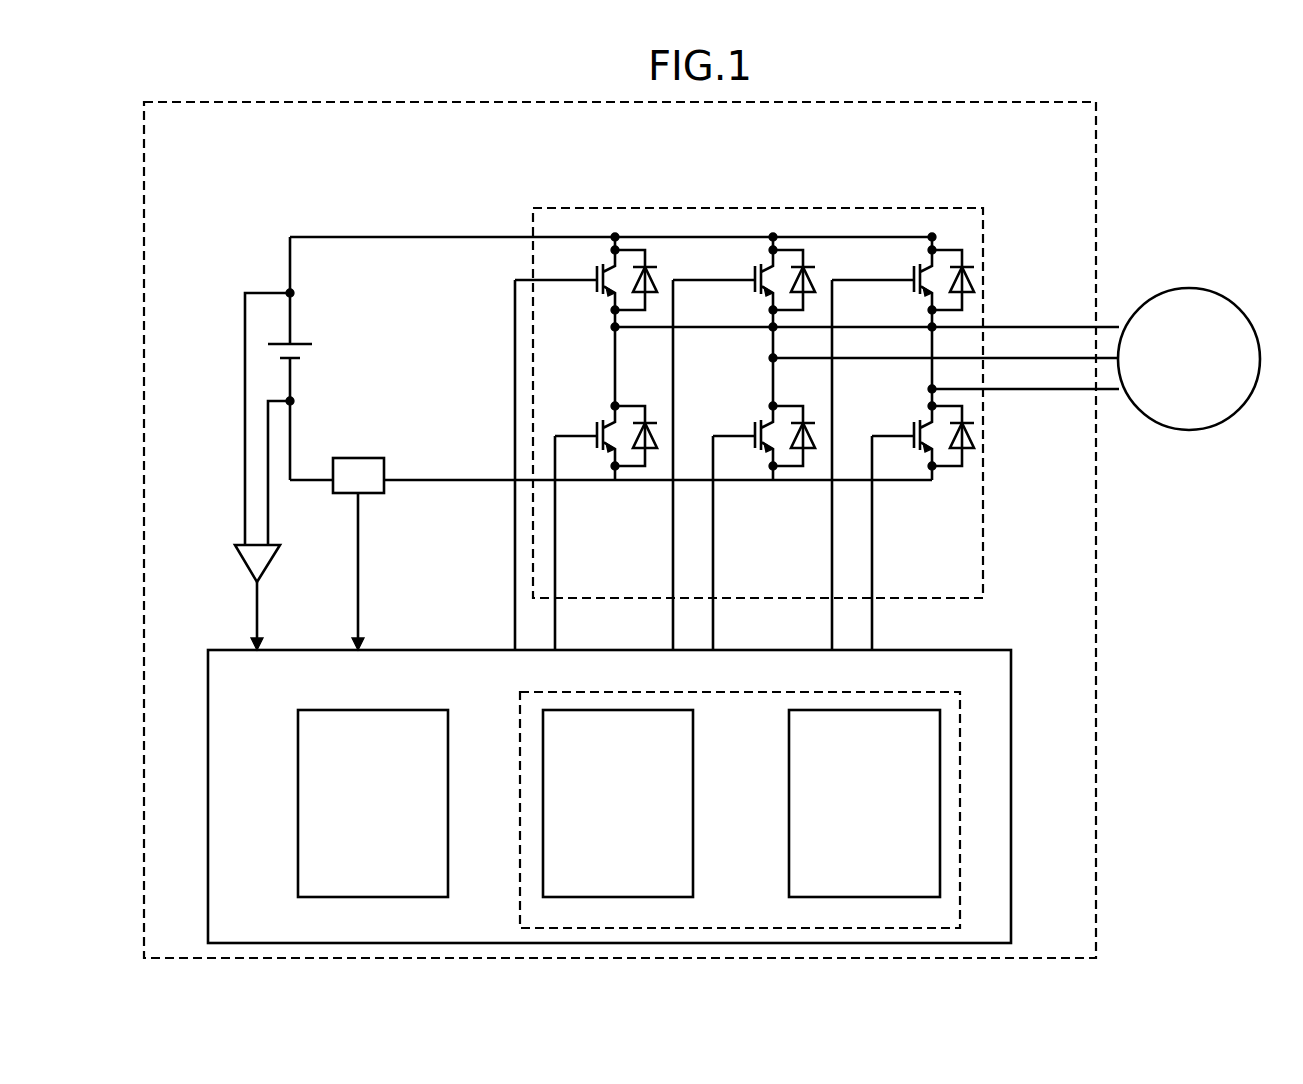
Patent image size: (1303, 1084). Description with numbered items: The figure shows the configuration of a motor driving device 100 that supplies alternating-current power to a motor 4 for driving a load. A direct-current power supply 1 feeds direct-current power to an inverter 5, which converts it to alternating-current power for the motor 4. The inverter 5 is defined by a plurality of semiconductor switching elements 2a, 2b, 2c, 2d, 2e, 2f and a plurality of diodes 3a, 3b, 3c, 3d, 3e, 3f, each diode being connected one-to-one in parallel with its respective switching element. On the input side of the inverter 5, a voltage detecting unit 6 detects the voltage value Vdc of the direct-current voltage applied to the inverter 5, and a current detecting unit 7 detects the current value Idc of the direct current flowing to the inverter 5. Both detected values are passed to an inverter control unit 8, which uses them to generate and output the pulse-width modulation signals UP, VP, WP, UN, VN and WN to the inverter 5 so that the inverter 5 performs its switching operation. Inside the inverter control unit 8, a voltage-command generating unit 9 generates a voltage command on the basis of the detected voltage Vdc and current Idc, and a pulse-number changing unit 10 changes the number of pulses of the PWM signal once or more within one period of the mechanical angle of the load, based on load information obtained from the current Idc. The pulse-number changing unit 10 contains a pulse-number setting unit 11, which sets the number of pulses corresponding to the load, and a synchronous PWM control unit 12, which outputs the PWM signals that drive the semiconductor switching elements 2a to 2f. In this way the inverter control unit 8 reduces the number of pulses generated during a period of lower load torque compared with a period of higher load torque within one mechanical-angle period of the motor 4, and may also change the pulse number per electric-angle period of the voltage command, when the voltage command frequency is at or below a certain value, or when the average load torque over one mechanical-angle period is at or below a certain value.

The motor driving device 100 is at (1097, 152).
The direct-current power supply 1 is at (303, 342).
The semiconductor switching element 2a is at (595, 262).
The semiconductor switching element 2b is at (753, 262).
The semiconductor switching element 2c is at (912, 262).
The semiconductor switching element 2d is at (596, 466).
The semiconductor switching element 2e is at (756, 466).
The semiconductor switching element 2f is at (916, 466).
The diode 3a is at (640, 262).
The diode 3b is at (797, 262).
The diode 3c is at (957, 262).
The diode 3d is at (645, 470).
The diode 3e is at (803, 470).
The diode 3f is at (962, 470).
The motor 4 is at (1206, 292).
The inverter 5 is at (965, 208).
The voltage detecting unit 6 is at (240, 548).
The current detecting unit 7 is at (371, 457).
The inverter control unit 8 is at (976, 650).
The voltage-command generating unit 9 is at (410, 898).
The pulse-number changing unit 10 is at (960, 735).
The pulse-number setting unit 11 is at (656, 898).
The synchronous PWM control unit 12 is at (903, 898).